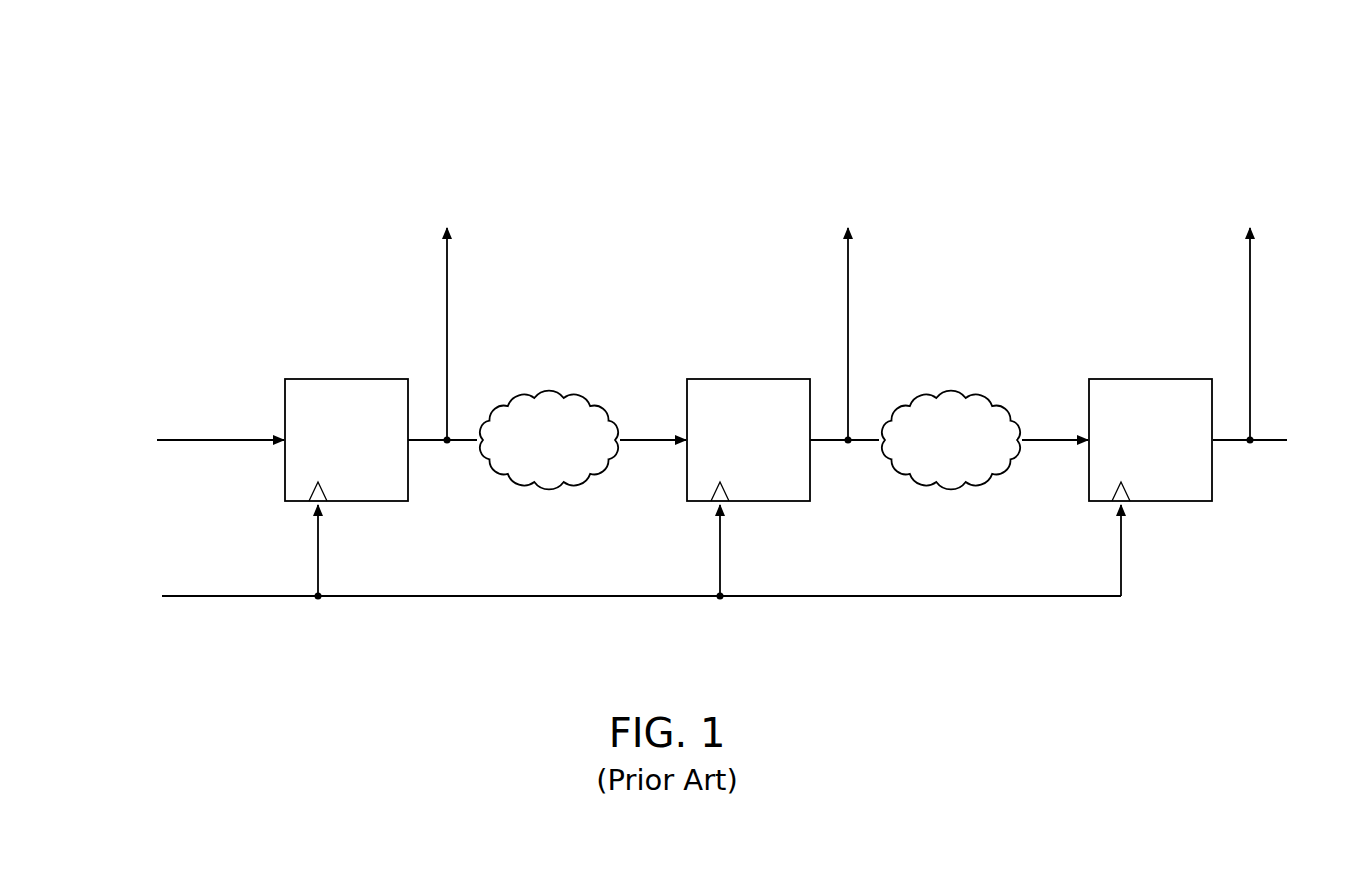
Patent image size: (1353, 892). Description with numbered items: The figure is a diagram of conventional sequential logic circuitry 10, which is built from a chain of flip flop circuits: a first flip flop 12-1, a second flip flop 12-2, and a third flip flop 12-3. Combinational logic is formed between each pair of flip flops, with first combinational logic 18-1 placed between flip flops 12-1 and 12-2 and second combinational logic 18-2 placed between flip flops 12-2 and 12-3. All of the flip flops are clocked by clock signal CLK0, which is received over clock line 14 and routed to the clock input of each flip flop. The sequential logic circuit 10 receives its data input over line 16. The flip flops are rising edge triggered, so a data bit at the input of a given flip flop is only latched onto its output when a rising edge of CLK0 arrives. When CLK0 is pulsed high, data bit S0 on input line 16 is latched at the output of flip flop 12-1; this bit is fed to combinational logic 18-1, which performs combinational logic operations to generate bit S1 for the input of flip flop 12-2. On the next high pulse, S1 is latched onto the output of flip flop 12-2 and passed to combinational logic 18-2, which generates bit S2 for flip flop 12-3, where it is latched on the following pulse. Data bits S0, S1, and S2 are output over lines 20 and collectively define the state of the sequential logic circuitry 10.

The sequential logic circuitry 10 is at (246, 112).
The first flip flop 12-1 is at (330, 379).
The second flip flop 12-2 is at (740, 379).
The third flip flop 12-3 is at (1130, 379).
The clock line 14 is at (530, 597).
The input line 16 is at (190, 440).
The first combinational logic 18-1 is at (563, 397).
The second combinational logic 18-2 is at (967, 397).
The output lines 20 is at (449, 260).